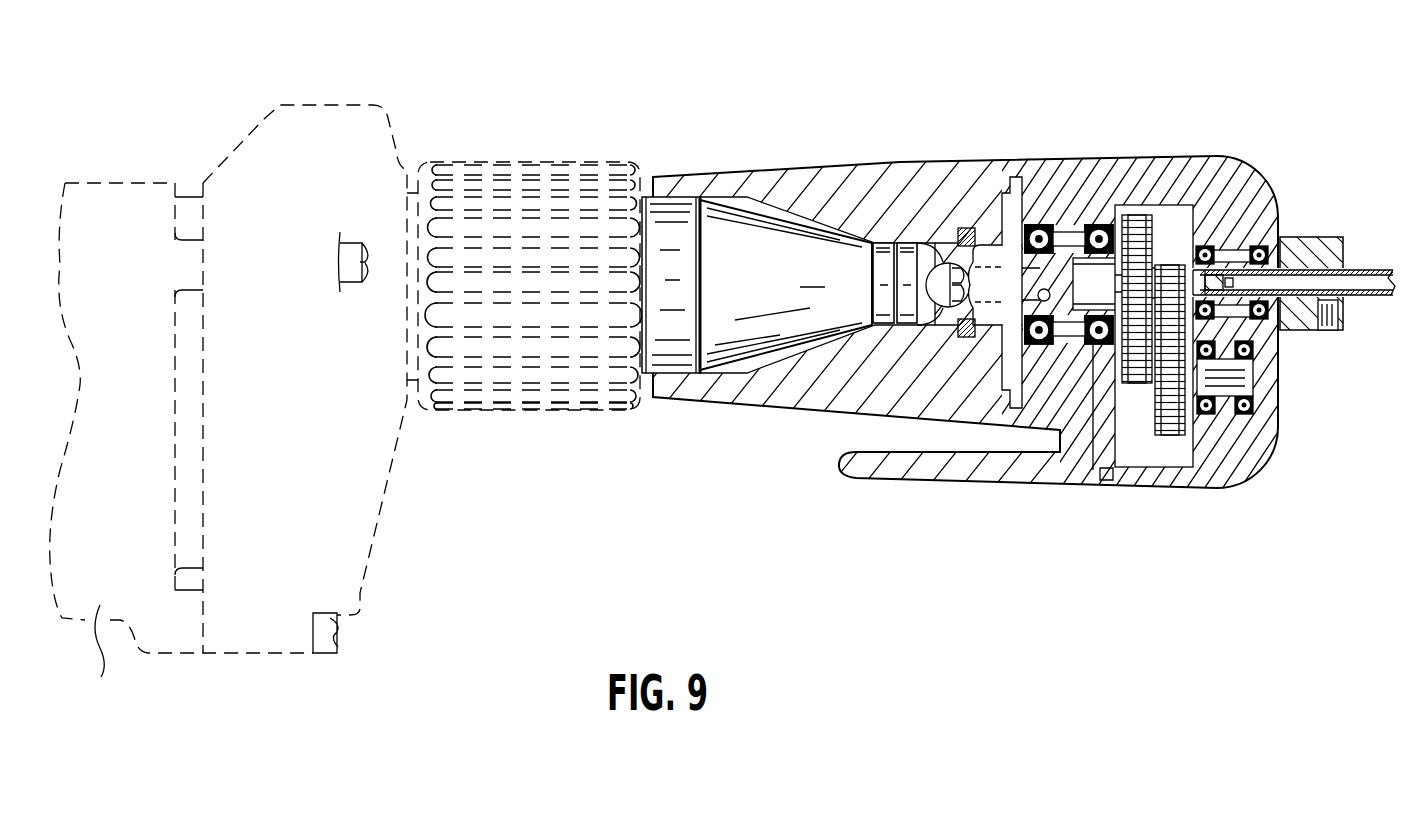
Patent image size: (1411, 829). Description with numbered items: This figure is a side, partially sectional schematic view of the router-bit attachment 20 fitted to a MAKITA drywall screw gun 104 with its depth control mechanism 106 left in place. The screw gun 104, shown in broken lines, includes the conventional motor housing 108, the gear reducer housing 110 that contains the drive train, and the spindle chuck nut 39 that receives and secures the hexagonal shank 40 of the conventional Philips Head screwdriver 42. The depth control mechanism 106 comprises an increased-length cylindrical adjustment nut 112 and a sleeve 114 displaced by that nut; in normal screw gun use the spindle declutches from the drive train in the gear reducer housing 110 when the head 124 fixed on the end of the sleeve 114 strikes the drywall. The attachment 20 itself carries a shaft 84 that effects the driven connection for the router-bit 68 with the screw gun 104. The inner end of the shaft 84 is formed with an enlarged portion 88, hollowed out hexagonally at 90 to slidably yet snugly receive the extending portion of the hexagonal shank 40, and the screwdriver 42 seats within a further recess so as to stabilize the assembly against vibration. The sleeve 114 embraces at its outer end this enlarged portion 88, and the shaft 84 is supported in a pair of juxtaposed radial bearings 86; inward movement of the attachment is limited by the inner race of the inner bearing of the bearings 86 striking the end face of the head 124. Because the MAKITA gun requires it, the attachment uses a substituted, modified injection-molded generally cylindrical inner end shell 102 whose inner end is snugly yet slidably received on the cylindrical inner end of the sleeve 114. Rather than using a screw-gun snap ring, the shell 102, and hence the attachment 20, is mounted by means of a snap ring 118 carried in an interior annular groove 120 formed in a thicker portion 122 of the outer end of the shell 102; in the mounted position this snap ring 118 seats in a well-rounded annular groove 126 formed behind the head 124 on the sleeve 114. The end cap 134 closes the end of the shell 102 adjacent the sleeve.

The router-bit attachment 20 is at (1062, 150).
The spindle chuck nut 39 is at (938, 327).
The hexagonal shank 40 is at (943, 295).
The Philips Head screwdriver 42 is at (957, 305).
The router-bit 68 is at (1380, 270).
The shaft 84 is at (1082, 294).
The radial bearings 86 is at (1042, 225).
The enlarged portion 88 is at (880, 268).
The hexagonal hollow 90 is at (1093, 488).
The inner end cylindrical shell 102 is at (850, 163).
The screw gun 104 is at (185, 682).
The depth control mechanism 106 is at (790, 274).
The motor housing 108 is at (100, 605).
The gear reducer housing 110 is at (247, 150).
The cylindrical adjustment nut 112 is at (470, 385).
The sleeve 114 is at (718, 260).
The snap ring 118 is at (960, 228).
The interior annular groove 120 is at (1003, 390).
The thicker portion 122 is at (1003, 265).
The head 124 is at (1000, 193).
The annular groove 126 is at (935, 240).
The end cap 134 is at (676, 195).